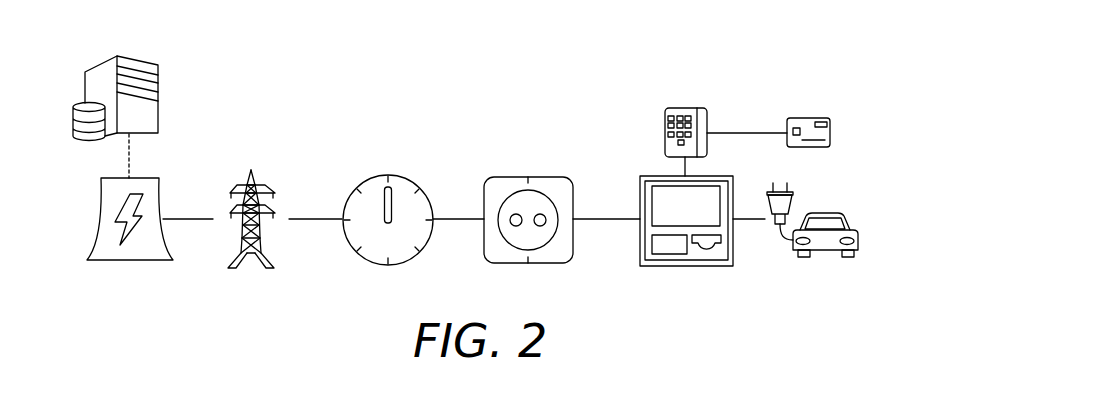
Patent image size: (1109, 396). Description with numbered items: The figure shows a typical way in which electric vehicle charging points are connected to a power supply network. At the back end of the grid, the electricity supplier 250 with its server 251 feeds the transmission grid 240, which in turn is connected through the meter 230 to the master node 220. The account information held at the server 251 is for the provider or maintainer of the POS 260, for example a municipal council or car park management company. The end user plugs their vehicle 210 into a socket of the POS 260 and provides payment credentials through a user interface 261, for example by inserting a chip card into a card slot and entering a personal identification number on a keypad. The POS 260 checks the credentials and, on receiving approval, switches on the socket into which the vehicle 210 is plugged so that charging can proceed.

The vehicle 210 is at (858, 237).
The master node 220 is at (545, 177).
The meter 230 is at (388, 176).
The transmission grid 240 is at (251, 170).
The electricity supplier 250 is at (100, 185).
The server 251 is at (158, 75).
The POS 260 is at (705, 267).
The user interface 261 is at (685, 108).